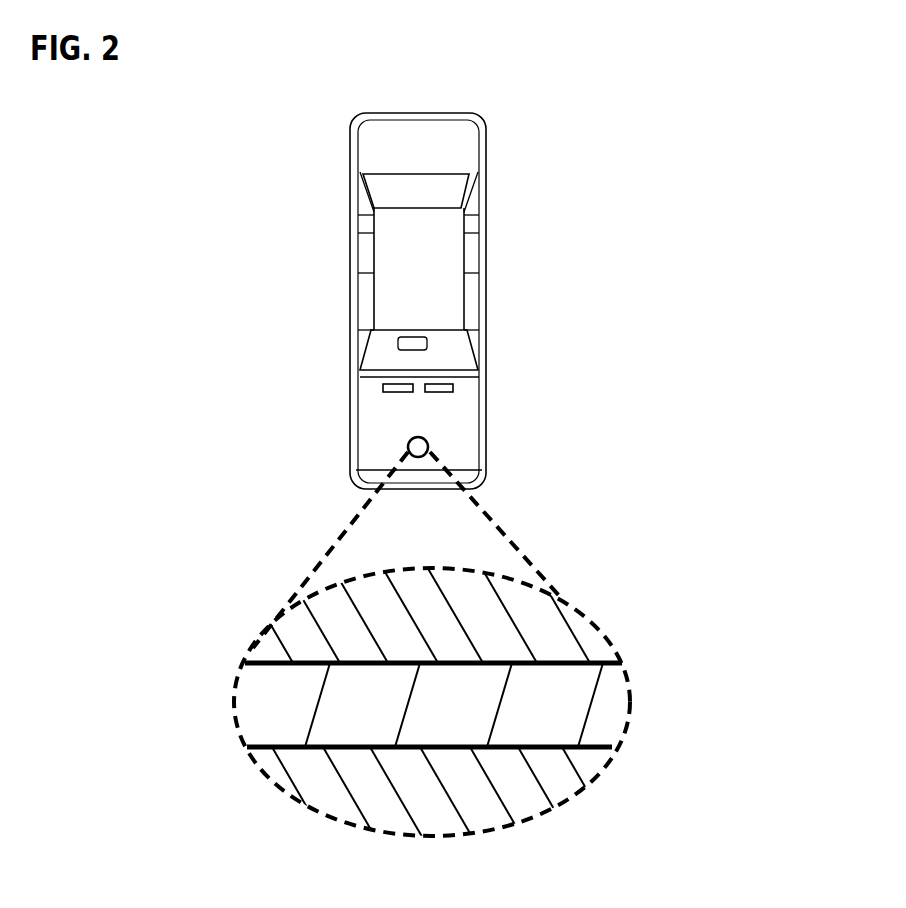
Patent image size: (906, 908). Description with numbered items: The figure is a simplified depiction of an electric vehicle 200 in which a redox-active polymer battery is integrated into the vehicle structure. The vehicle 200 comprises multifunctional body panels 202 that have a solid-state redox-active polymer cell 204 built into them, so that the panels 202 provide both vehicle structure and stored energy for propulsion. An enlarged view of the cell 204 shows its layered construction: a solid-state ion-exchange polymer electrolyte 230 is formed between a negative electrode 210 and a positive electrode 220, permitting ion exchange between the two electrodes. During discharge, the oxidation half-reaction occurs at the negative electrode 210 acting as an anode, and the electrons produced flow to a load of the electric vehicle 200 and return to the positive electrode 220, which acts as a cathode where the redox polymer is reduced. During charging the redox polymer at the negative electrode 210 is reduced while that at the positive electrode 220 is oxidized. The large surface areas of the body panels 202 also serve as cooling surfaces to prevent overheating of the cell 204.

The electric vehicle 200 is at (365, 301).
The multifunctional body panels 202 is at (427, 135).
The solid-state redox-active polymer cell 204 is at (613, 582).
The negative electrode 210 is at (427, 611).
The positive electrode 220 is at (433, 797).
The solid-state ion-exchange polymer electrolyte 230 is at (454, 705).